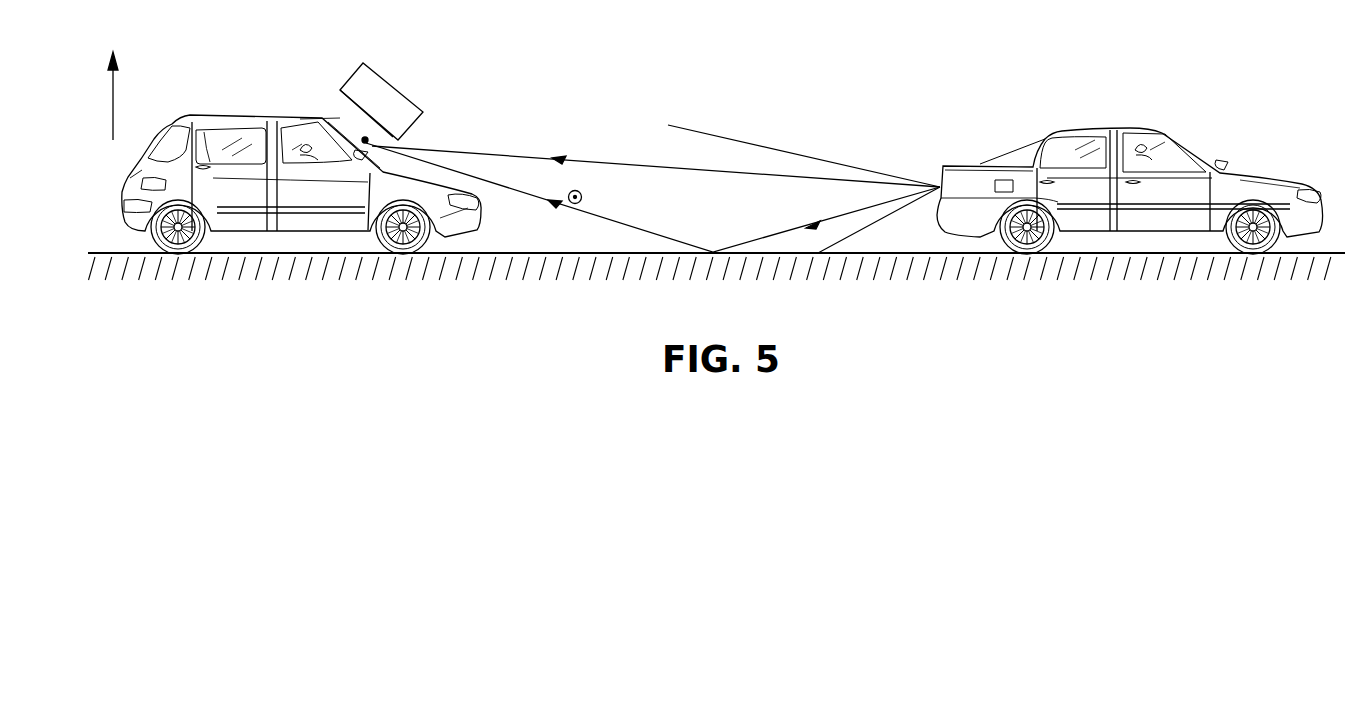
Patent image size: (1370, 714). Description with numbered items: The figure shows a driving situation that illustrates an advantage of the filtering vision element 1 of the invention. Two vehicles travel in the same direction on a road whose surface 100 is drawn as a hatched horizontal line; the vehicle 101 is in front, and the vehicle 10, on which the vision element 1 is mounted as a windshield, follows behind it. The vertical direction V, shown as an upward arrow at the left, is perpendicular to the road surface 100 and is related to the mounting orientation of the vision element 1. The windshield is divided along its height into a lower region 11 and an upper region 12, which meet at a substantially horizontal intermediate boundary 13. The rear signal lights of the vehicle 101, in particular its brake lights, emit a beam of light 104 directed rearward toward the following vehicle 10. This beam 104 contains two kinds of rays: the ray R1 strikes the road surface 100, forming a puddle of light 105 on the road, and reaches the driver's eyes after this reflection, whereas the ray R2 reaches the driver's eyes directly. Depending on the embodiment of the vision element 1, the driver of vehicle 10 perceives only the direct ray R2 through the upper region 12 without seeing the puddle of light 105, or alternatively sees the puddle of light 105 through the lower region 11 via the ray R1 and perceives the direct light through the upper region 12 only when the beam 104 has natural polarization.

The vision element 1 is at (308, 117).
The vehicle 10 is at (218, 117).
The lower region 11 is at (392, 116).
The upper region 12 is at (367, 66).
The intermediate boundary 13 is at (364, 137).
The road surface 100 is at (340, 257).
The vehicle 101 is at (1124, 127).
The beam of light 104 is at (885, 217).
The puddle of light 105 is at (836, 257).
The light ray R1 is at (518, 194).
The light ray R2 is at (596, 162).
The vertical direction V is at (103, 87).